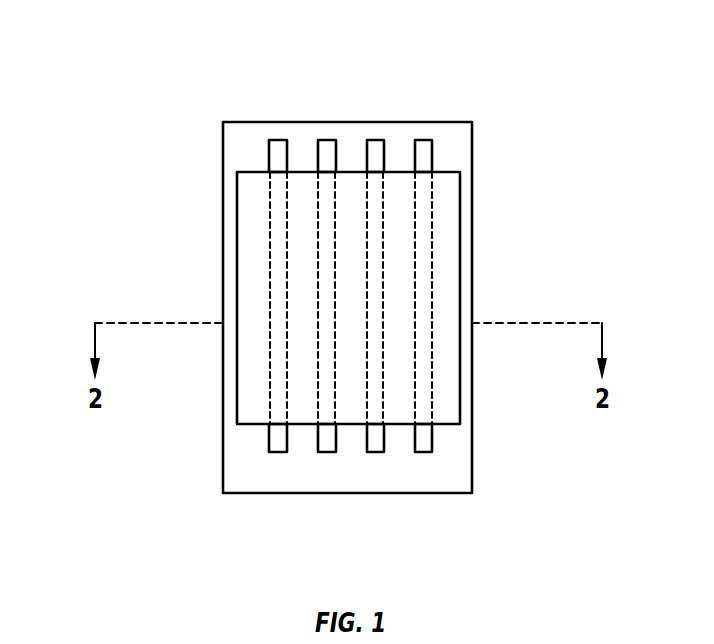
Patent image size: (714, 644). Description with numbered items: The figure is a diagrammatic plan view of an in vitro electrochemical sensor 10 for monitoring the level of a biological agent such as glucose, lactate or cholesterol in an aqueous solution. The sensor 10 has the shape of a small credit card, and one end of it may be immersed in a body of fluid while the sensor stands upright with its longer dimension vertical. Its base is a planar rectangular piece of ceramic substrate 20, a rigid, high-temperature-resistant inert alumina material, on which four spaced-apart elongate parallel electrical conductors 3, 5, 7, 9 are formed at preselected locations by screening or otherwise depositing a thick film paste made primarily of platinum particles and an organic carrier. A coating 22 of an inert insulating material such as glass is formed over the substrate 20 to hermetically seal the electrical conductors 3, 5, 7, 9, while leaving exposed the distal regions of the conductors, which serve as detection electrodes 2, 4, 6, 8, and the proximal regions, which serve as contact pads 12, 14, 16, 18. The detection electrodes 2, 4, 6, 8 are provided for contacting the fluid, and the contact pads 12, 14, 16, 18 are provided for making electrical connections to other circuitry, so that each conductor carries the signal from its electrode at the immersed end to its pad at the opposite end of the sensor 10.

The in vitro electrochemical sensor 10 is at (92, 34).
The contact pad 12 is at (237, 123).
The contact pad 14 is at (277, 102).
The contact pad 16 is at (425, 102).
The contact pad 18 is at (463, 123).
The detection electrode 2 is at (243, 475).
The detection electrode 4 is at (284, 491).
The detection electrode 6 is at (418, 493).
The detection electrode 8 is at (456, 475).
The electrical conductor 3 is at (471, 298).
The electrical conductor 5 is at (447, 298).
The electrical conductor 7 is at (423, 298).
The electrical conductor 9 is at (399, 283).
The ceramic substrate 20 is at (383, 307).
The coating 22 is at (390, 298).